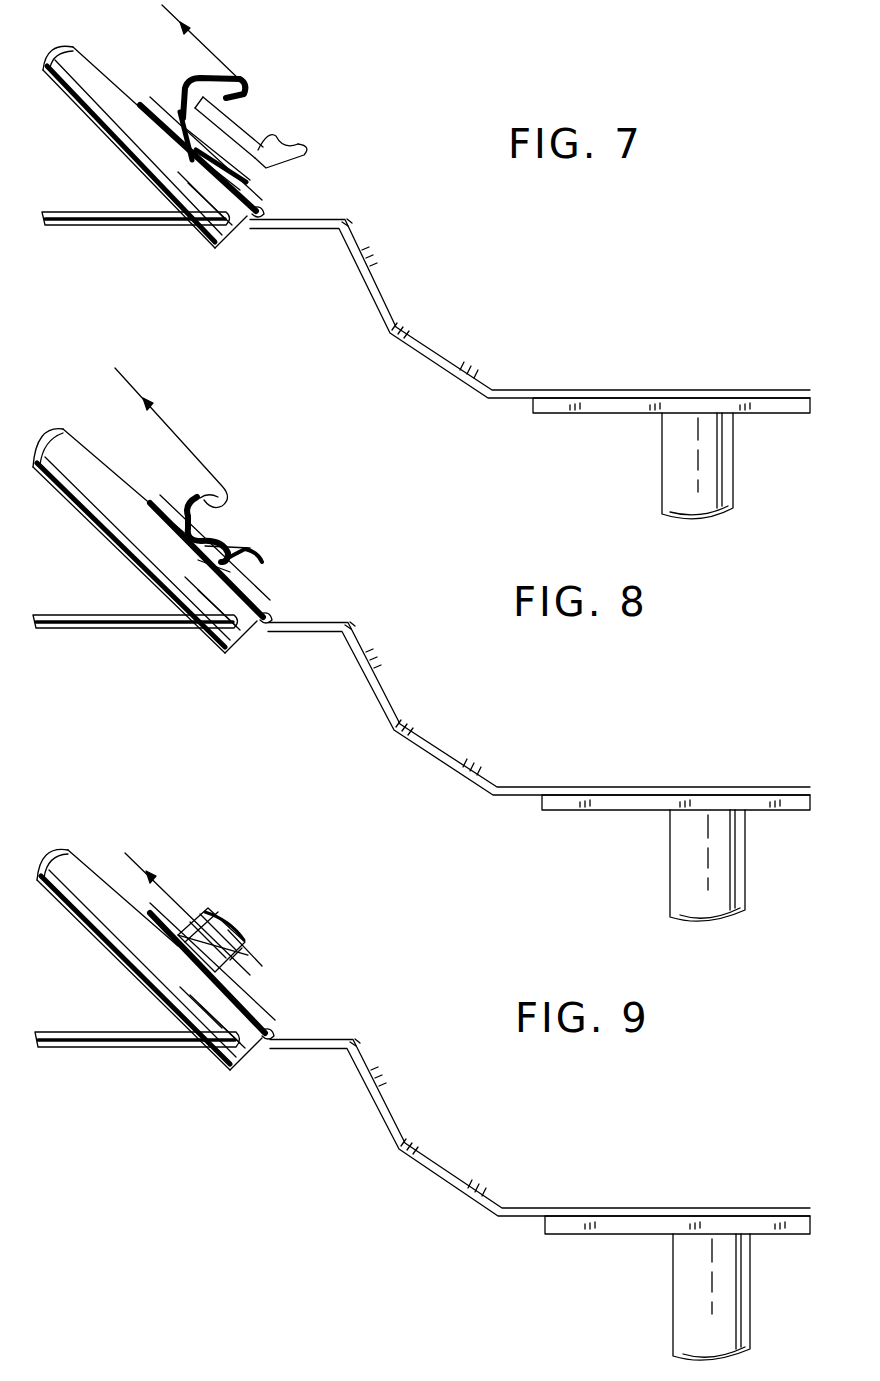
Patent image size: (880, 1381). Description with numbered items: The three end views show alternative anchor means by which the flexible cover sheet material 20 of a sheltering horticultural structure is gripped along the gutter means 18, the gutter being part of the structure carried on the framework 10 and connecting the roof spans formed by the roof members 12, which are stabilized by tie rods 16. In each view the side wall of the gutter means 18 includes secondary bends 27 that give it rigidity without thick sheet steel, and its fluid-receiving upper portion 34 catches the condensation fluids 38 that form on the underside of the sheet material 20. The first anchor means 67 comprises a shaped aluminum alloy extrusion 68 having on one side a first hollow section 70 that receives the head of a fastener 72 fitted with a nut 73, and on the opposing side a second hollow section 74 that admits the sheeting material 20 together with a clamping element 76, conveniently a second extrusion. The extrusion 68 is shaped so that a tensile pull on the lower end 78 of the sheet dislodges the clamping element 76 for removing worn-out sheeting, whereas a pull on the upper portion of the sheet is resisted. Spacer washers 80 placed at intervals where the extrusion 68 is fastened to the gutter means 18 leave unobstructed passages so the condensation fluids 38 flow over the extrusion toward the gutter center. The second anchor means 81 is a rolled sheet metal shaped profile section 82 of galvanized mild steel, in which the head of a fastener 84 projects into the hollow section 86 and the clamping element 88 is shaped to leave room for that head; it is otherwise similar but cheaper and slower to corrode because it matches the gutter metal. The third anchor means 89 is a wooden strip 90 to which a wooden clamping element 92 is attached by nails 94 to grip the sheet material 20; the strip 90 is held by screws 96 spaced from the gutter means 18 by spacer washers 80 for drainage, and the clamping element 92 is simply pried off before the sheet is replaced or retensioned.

In FIG. 7, the framework 10 is at (664, 473).
In FIG. 8, the framework 10 is at (673, 862).
In FIG. 9, the framework 10 is at (674, 1306).
In FIG. 7, the roof member 12 is at (50, 62).
In FIG. 8, the roof member 12 is at (49, 445).
In FIG. 9, the roof member 12 is at (48, 868).
In FIG. 7, the tie rod 16 is at (138, 227).
In FIG. 8, the tie rod 16 is at (138, 630).
In FIG. 9, the tie rod 16 is at (97, 1048).
In FIG. 7, the gutter means 18 is at (530, 289).
In FIG. 8, the gutter means 18 is at (539, 702).
In FIG. 9, the gutter means 18 is at (540, 1120).
In FIG. 7, the sheet material 20 is at (213, 45).
In FIG. 8, the sheet material 20 is at (180, 440).
In FIG. 9, the sheet material 20 is at (178, 904).
In FIG. 7, the secondary bend 27 is at (351, 225).
In FIG. 8, the secondary bend 27 is at (355, 623).
In FIG. 9, the secondary bend 27 is at (358, 1041).
In FIG. 7, the fluid-receiving upper portion 34 is at (329, 216).
In FIG. 8, the fluid-receiving upper portion 34 is at (336, 616).
In FIG. 9, the fluid-receiving upper portion 34 is at (334, 1033).
In FIG. 7, the condensation fluids 38 is at (182, 27).
In FIG. 8, the condensation fluids 38 is at (146, 404).
In FIG. 9, the condensation fluids 38 is at (148, 873).
In FIG. 7, the anchor means 67 is at (251, 122).
In FIG. 7, the aluminum alloy extrusion 68 is at (186, 80).
In FIG. 7, the first hollow section 70 is at (184, 110).
In FIG. 7, the fastener 72 is at (222, 178).
In FIG. 7, the nut 73 is at (150, 176).
In FIG. 8, the nut 73 is at (158, 587).
In FIG. 9, the nut 73 is at (150, 996).
In FIG. 7, the second hollow section 74 is at (222, 101).
In FIG. 7, the clamping element 76 is at (283, 140).
In FIG. 7, the lower end of the sheeting material 78 is at (315, 136).
In FIG. 8, the lower end of the sheeting material 78 is at (263, 566).
In FIG. 9, the lower end of the sheeting material 78 is at (248, 957).
In FIG. 7, the spacer washer 80 is at (170, 124).
In FIG. 8, the spacer washer 80 is at (172, 535).
In FIG. 9, the spacer washer 80 is at (172, 960).
In FIG. 8, the anchor means 81 is at (245, 531).
In FIG. 8, the rolled sheet metal shaped profile section 82 is at (194, 495).
In FIG. 8, the fastener 84 is at (229, 534).
In FIG. 8, the hollow section 86 is at (213, 508).
In FIG. 8, the clamping element 88 is at (264, 561).
In FIG. 9, the anchor means 89 is at (228, 921).
In FIG. 9, the wooden strip 90 is at (191, 920).
In FIG. 9, the wooden clamping element 92 is at (242, 944).
In FIG. 9, the nails 94 is at (229, 906).
In FIG. 9, the screws 96 is at (176, 1012).